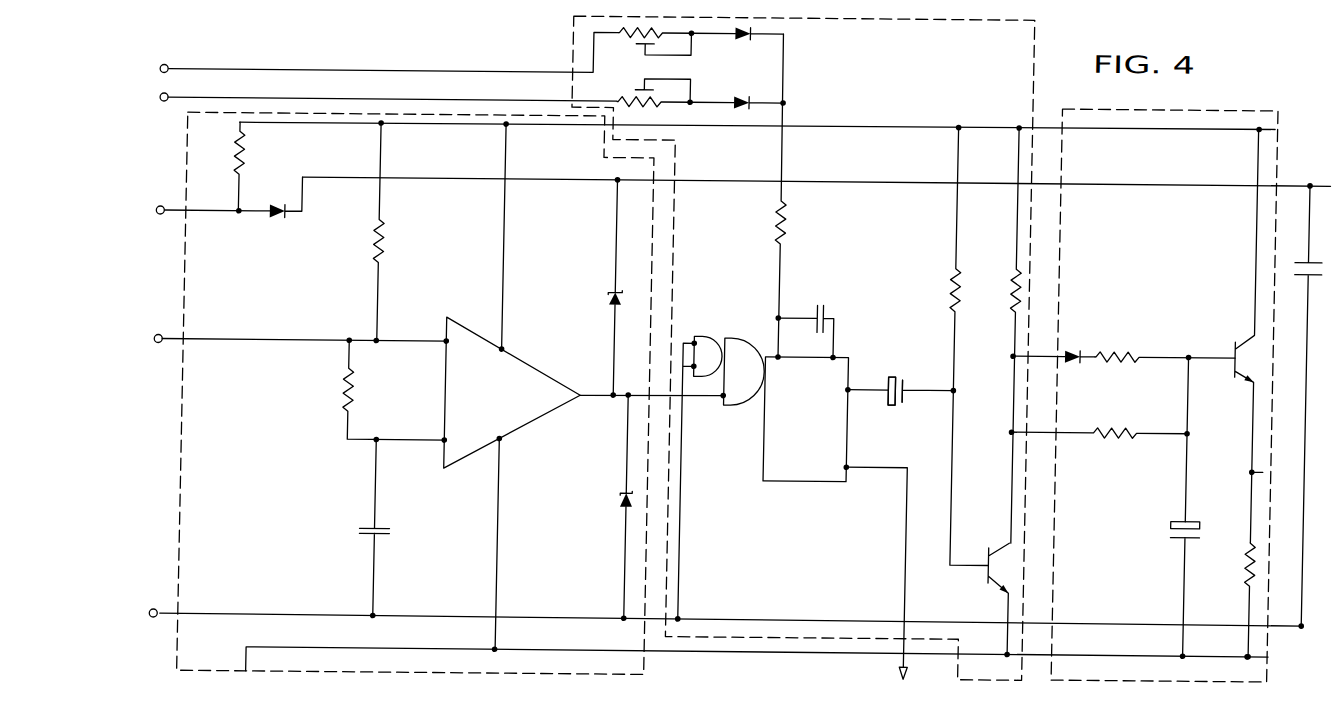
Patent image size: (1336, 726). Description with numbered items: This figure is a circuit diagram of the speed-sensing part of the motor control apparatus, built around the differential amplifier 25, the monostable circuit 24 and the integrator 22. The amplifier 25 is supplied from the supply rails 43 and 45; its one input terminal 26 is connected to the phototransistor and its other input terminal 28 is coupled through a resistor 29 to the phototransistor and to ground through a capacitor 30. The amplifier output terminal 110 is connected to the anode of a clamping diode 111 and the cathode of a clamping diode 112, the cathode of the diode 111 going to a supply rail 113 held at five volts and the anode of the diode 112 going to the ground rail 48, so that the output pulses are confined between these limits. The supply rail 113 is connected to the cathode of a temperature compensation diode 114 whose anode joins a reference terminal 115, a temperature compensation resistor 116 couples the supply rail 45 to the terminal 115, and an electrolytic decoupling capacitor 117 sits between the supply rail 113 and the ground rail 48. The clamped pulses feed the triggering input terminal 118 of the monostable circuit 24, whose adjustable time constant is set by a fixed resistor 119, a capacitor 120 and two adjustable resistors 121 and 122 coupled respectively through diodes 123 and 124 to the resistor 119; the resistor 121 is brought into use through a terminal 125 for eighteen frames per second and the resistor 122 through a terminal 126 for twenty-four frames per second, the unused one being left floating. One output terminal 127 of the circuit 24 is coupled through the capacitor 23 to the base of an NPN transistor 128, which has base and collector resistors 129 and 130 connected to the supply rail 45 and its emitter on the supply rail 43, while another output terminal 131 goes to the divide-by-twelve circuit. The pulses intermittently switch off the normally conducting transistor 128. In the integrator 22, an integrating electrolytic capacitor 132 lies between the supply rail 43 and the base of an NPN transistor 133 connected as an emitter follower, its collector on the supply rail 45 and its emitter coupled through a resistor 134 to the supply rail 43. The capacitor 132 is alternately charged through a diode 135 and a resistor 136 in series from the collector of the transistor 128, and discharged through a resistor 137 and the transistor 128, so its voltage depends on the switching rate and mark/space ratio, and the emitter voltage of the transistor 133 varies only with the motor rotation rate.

The integrator 22 is at (1277, 668).
The capacitor 23 is at (904, 367).
The monostable circuit 24 is at (816, 491).
The differential amplifier 25 is at (514, 404).
The input terminal 26 is at (430, 326).
The input terminal 28 is at (423, 438).
The resistor 29 is at (348, 384).
The capacitor 30 is at (366, 529).
The supply rail 43 is at (841, 648).
The supply rail 45 is at (1231, 119).
The ground rail 48 is at (1284, 616).
The output terminal 110 is at (590, 388).
The clamping diode 111 is at (631, 286).
The clamping diode 112 is at (627, 496).
The supply rail 113 is at (1294, 176).
The temperature compensation diode 114 is at (280, 214).
The reference terminal 115 is at (166, 216).
The temperature compensation resistor 116 is at (235, 156).
The electrolytic decoupling capacitor 117 is at (1315, 246).
The triggering input terminal 118 is at (715, 394).
The fixed resistor 119 is at (792, 215).
The capacitor 120 is at (831, 300).
The adjustable resistor 121 is at (652, 100).
The adjustable resistor 122 is at (636, 39).
The diode 123 is at (737, 87).
The diode 124 is at (743, 40).
The terminal 125 is at (172, 94).
The terminal 126 is at (172, 62).
The output terminal 127 is at (890, 387).
The NPN transistor 128 is at (1005, 600).
The base resistor 129 is at (958, 277).
The collector resistor 130 is at (1018, 281).
The output terminal 131 is at (887, 462).
The integrating electrolytic capacitor 132 is at (1179, 520).
The NPN transistor 133 is at (1239, 334).
The resistor 134 is at (1251, 547).
The diode 135 is at (1077, 342).
The resistor 136 is at (1127, 340).
The resistor 137 is at (1123, 425).